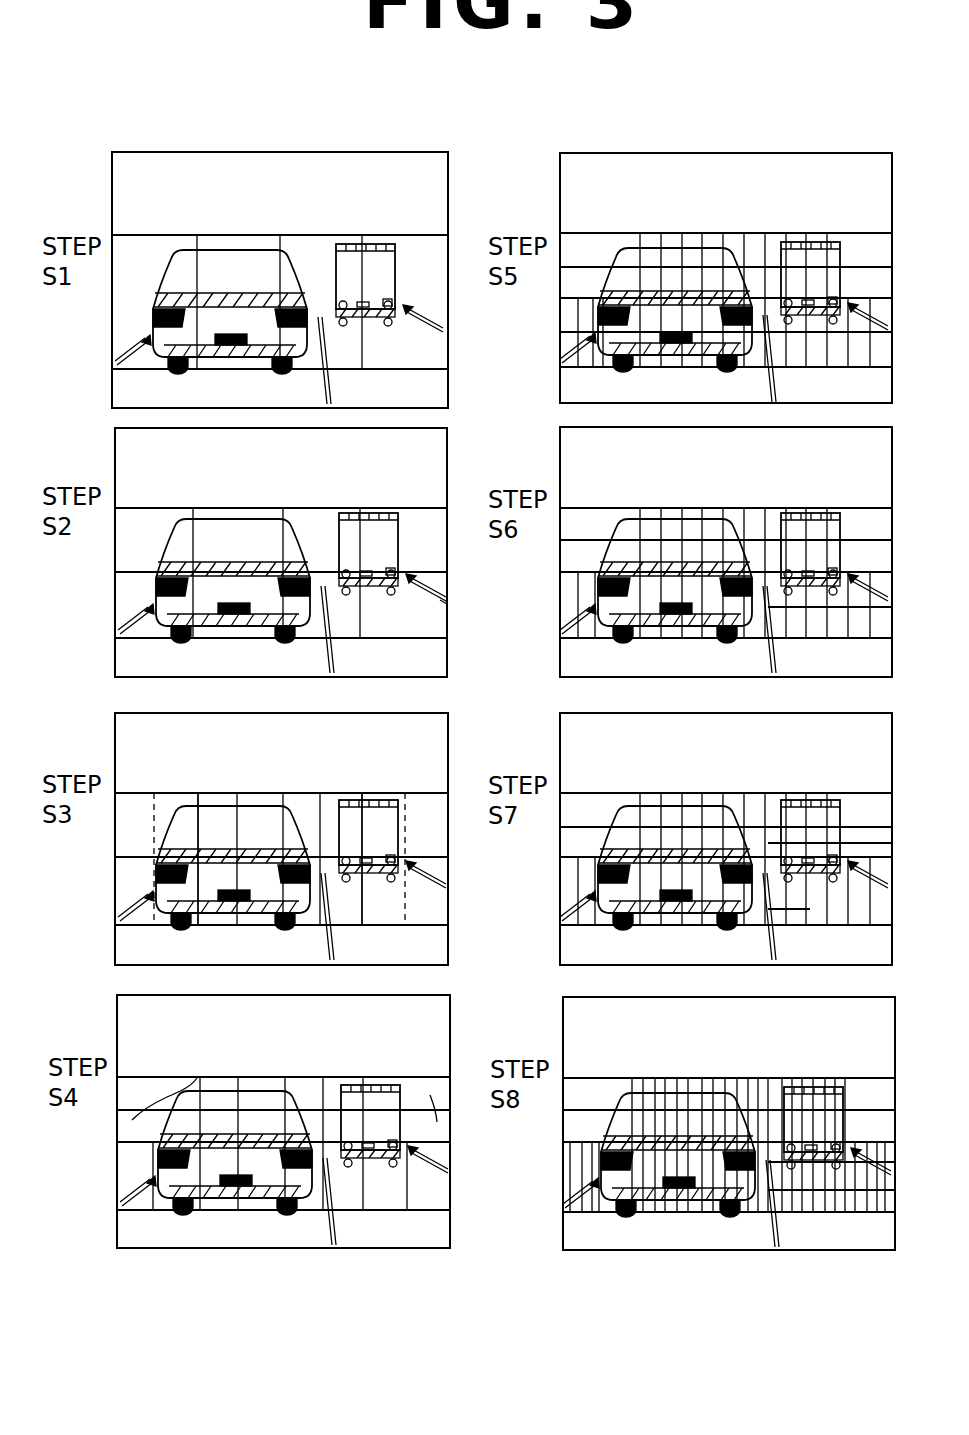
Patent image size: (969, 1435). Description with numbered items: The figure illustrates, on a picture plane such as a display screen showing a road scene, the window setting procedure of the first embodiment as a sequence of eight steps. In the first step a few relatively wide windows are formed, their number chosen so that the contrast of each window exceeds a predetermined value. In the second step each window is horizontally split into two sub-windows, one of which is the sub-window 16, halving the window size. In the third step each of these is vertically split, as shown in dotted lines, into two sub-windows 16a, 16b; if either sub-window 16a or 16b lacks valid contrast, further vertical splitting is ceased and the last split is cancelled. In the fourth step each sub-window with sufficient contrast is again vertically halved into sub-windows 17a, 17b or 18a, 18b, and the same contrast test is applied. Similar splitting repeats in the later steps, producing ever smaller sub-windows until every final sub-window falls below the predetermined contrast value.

The sub-window 16 is at (438, 615).
The sub-window 16a is at (130, 803).
The sub-window 16b is at (177, 795).
The sub-window 17a is at (408, 1085).
The sub-window 17b is at (430, 1095).
The sub-window 18a is at (130, 1087).
The sub-window 18b is at (197, 1078).